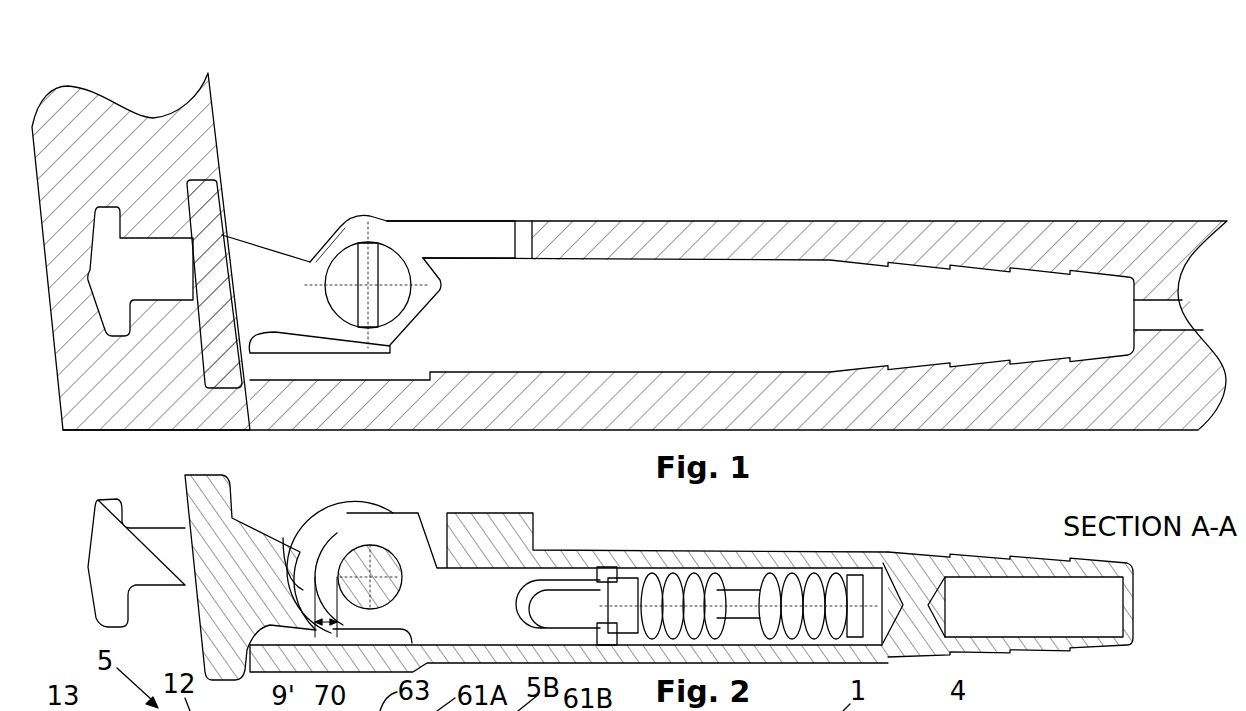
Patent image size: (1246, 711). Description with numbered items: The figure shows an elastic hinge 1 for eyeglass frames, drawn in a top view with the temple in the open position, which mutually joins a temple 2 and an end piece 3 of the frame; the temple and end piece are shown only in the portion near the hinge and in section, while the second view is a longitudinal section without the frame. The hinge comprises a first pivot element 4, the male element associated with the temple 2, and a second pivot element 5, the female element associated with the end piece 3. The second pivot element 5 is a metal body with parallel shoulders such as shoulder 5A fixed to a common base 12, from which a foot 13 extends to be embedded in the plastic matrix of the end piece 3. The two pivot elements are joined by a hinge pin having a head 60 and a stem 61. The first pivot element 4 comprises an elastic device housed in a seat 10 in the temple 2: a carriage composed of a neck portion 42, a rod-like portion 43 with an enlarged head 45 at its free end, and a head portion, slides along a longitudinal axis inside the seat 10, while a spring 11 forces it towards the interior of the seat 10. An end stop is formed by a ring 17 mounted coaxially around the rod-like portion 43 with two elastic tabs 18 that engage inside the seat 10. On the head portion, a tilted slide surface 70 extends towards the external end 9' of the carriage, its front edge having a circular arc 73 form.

In FIG. 1, the elastic hinge 1 is at (850, 116).
In FIG. 2, the elastic hinge 1 is at (805, 501).
In FIG. 1, the temple 2 is at (1077, 243).
In FIG. 1, the end piece 3 is at (191, 125).
In FIG. 1, the first pivot element 4 is at (631, 134).
In FIG. 2, the first pivot element 4 is at (875, 525).
In FIG. 1, the second pivot element 5 is at (287, 188).
In FIG. 2, the second pivot element 5 is at (258, 520).
In FIG. 1, the shoulder 5A is at (388, 237).
In FIG. 2, the external end 9' is at (296, 547).
In FIG. 1, the seat 10 is at (868, 300).
In FIG. 2, the seat 10 is at (737, 580).
In FIG. 2, the spring 11 is at (861, 555).
In FIG. 1, the base 12 is at (202, 208).
In FIG. 2, the base 12 is at (212, 508).
In FIG. 1, the foot 13 is at (120, 262).
In FIG. 2, the foot 13 is at (145, 560).
In FIG. 2, the ring 17 is at (623, 603).
In FIG. 2, the elastic tabs 18 is at (582, 602).
In FIG. 2, the neck portion 42 is at (453, 600).
In FIG. 2, the rod-like portion 43 is at (741, 605).
In FIG. 2, the enlarged head 45 is at (861, 590).
In FIG. 1, the head 60 is at (393, 270).
In FIG. 2, the stem 61 is at (377, 557).
In FIG. 2, the slide surface 70 is at (323, 560).
In FIG. 2, the circular arc 73 is at (344, 550).